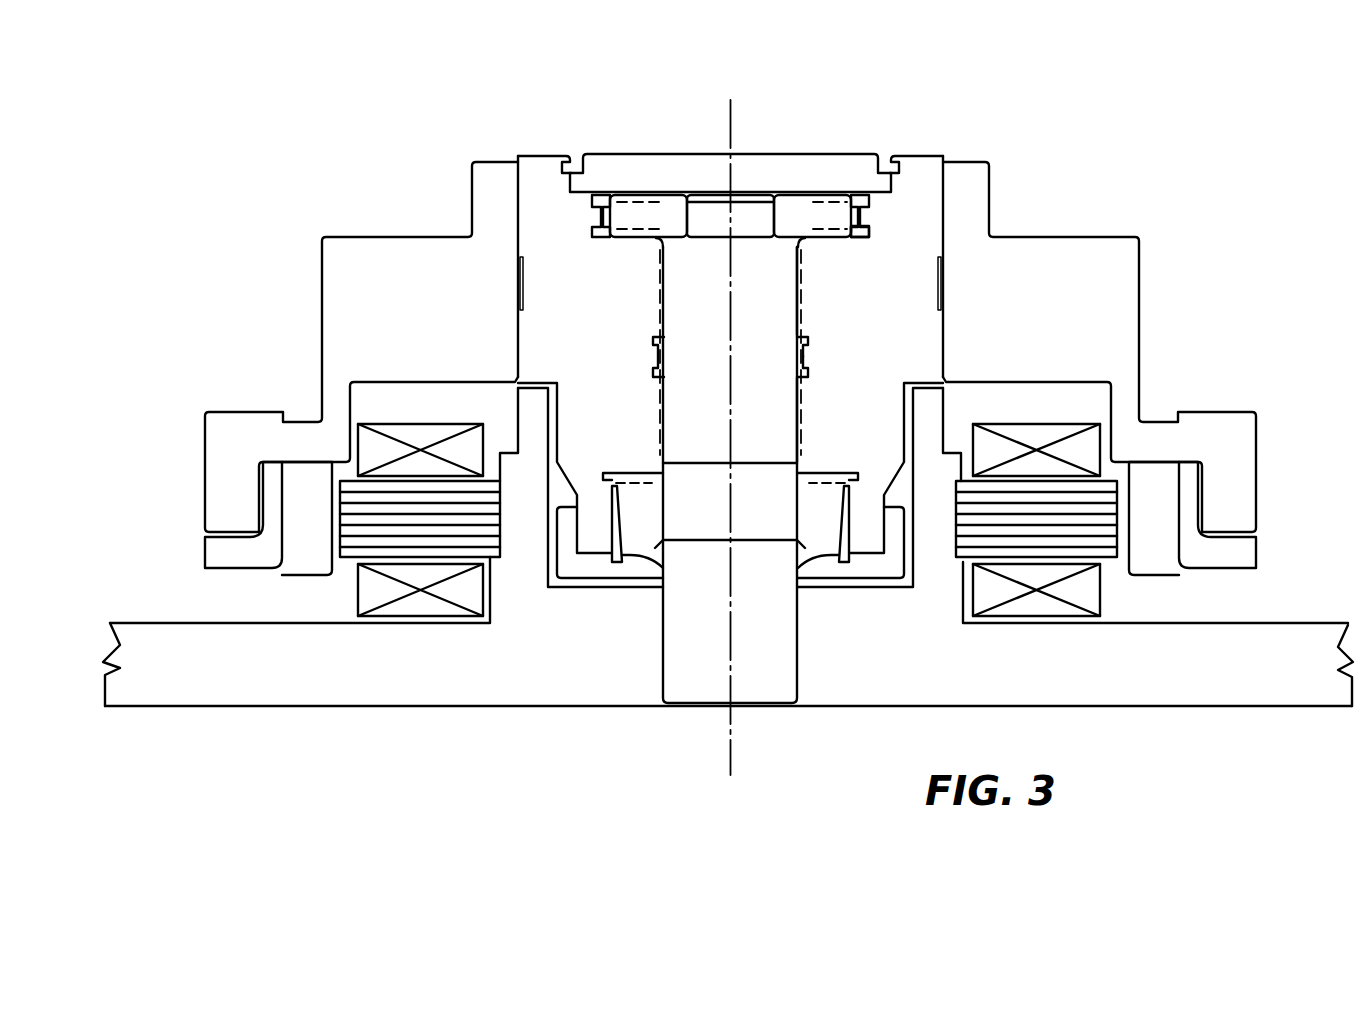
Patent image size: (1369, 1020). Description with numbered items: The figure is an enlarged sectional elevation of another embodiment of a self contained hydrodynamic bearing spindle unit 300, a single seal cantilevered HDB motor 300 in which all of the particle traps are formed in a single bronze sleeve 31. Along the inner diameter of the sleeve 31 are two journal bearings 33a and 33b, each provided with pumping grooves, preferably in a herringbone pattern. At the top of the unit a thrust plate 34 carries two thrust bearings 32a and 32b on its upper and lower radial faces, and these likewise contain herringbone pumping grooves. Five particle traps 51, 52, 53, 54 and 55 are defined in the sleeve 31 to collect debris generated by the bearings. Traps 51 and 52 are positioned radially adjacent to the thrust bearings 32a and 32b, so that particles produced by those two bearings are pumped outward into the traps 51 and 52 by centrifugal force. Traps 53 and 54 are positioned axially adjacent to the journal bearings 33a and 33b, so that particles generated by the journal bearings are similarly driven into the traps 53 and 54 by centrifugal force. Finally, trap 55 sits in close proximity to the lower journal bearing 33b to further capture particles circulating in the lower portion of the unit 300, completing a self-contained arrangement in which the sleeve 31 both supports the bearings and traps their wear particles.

The self contained HDB spindle unit 300 is at (1064, 162).
The bronze sleeve 31 is at (598, 331).
The thrust bearing 32a is at (821, 199).
The thrust bearing 32b is at (821, 233).
The journal bearing 33a is at (801, 295).
The journal bearing 33b is at (801, 406).
The thrust plate 34 is at (810, 227).
The particle trap 51 is at (869, 204).
The particle trap 52 is at (869, 233).
The particle trap 53 is at (809, 340).
The particle trap 54 is at (809, 375).
The particle trap 55 is at (852, 473).